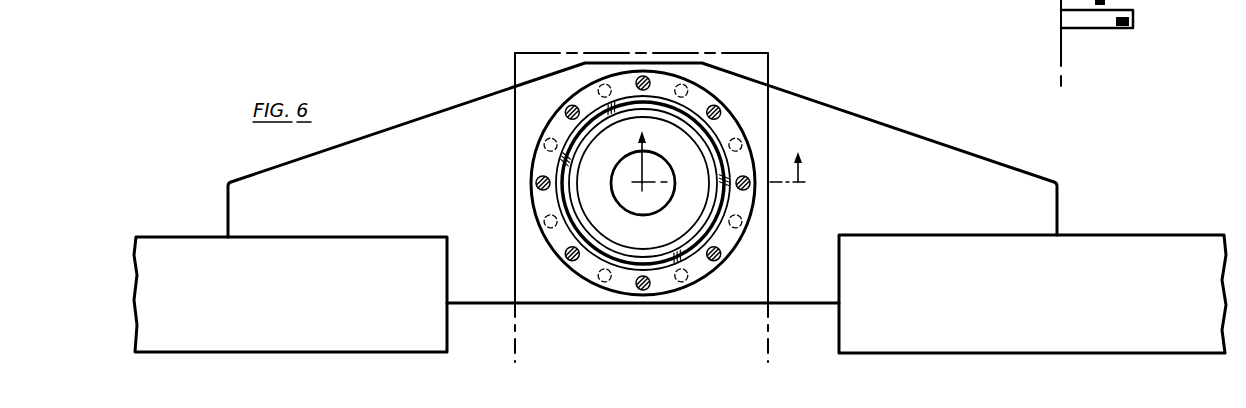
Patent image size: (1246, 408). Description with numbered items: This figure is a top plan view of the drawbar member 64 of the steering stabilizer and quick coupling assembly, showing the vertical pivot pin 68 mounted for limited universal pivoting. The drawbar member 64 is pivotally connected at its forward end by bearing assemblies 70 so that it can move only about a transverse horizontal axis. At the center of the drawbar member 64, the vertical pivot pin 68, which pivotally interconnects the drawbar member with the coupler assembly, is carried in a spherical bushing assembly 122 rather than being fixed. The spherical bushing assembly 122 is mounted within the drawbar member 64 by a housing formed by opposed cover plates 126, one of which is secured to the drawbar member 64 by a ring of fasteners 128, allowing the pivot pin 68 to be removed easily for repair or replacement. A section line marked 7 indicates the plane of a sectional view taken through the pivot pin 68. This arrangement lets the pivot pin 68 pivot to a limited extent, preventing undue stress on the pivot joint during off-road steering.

The section line 7- 7 is at (714, 155).
The drawbar member 64 is at (911, 124).
The vertical pivot pin 68 is at (679, 167).
The bearing assemblies 70 is at (341, 306).
The spherical bushing assembly 122 is at (721, 89).
The cover plates 126 is at (667, 82).
The fasteners 128 is at (537, 184).